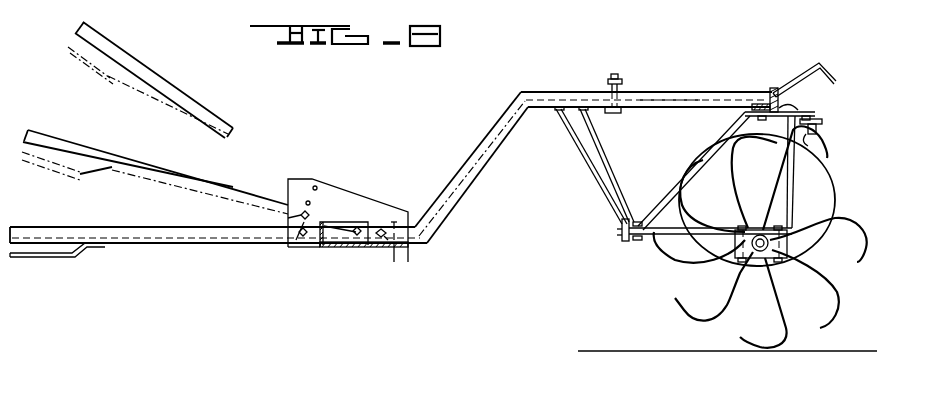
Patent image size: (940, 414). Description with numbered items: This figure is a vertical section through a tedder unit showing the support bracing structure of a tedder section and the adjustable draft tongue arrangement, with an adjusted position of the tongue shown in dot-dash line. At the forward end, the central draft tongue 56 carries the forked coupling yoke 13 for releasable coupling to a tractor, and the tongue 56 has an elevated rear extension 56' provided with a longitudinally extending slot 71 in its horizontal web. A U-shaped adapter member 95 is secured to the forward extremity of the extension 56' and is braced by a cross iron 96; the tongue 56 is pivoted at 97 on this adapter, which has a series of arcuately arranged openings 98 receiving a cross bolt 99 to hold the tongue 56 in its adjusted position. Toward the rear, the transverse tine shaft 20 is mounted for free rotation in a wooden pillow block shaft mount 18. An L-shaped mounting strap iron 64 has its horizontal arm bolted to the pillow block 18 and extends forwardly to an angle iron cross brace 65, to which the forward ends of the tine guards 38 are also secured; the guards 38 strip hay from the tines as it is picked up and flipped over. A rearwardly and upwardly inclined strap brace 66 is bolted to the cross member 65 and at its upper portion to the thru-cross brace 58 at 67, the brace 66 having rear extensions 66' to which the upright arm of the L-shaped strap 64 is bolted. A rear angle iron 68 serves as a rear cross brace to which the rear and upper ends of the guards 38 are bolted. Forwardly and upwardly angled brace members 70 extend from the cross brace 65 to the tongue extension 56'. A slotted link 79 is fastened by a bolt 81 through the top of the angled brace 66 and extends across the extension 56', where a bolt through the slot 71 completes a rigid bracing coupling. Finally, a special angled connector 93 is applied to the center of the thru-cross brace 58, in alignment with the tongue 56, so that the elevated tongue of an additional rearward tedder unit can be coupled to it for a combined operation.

The forked coupling yoke 13 is at (63, 259).
The pillow block shaft mount 18 is at (742, 238).
The transverse tine shaft 20 is at (768, 243).
The tine guards 38 is at (835, 200).
The central draft tongue 56 is at (218, 132).
The elevated rear extension of draft tongue 56' is at (593, 142).
The thru-cross brace 58 is at (786, 107).
The L-shaped mounting strap iron 64 is at (828, 158).
The angle iron cross brace 65 is at (635, 222).
The inclined strap brace 66 is at (694, 171).
The rear extensions 66' is at (811, 163).
The bolted connection 67 is at (771, 106).
The rear angle iron 68 is at (818, 137).
The additional brace members 70 is at (598, 176).
The longitudinally extending slot 71 is at (665, 101).
The link 79 is at (620, 86).
The bolt 81 is at (616, 113).
The angled connector 93 is at (812, 67).
The U-shaped adapter member 95 is at (396, 250).
The cross iron 96 is at (327, 228).
The pivot 97 is at (383, 229).
The arcuately arranged openings 98 is at (309, 200).
The cross bolt 99 is at (298, 222).